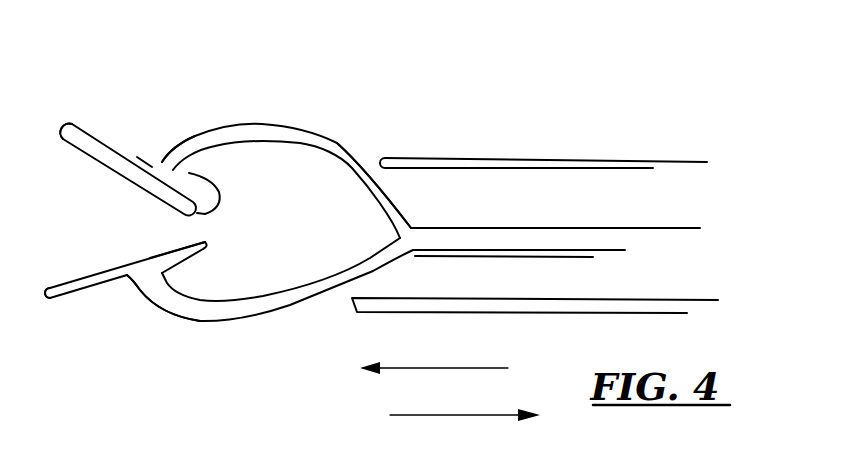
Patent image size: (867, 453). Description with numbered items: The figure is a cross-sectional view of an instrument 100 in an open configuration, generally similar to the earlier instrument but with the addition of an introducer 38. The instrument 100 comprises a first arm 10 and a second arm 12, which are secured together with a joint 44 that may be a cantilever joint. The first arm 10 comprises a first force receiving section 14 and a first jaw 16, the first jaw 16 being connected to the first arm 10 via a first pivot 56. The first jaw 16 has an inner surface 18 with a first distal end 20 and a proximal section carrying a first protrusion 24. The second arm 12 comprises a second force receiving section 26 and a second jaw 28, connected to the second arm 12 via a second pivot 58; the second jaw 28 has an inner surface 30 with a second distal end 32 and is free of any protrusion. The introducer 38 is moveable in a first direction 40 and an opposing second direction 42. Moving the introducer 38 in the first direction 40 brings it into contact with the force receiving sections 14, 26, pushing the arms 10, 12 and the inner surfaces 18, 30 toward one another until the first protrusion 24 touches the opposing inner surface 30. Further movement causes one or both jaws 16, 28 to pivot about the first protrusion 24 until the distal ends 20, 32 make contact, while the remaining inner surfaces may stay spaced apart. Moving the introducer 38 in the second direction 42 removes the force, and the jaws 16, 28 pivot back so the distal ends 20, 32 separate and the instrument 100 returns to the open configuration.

The instrument 100 is at (380, 86).
The first arm 10 is at (238, 128).
The second arm 12 is at (190, 318).
The first force receiving section 14 is at (330, 140).
The first jaw 16 is at (127, 156).
The inner surface 18 is at (120, 174).
The first distal end 20 is at (63, 138).
The first protrusion 24 is at (201, 212).
The second force receiving section 26 is at (288, 306).
The second jaw 28 is at (85, 291).
The inner surface 30 is at (135, 257).
The second distal end 32 is at (52, 284).
The introducer 38 is at (491, 156).
The first direction 40 is at (449, 369).
The second direction 42 is at (450, 416).
The joint 44 is at (414, 226).
The first pivot 56 is at (165, 158).
The second pivot 58 is at (137, 292).